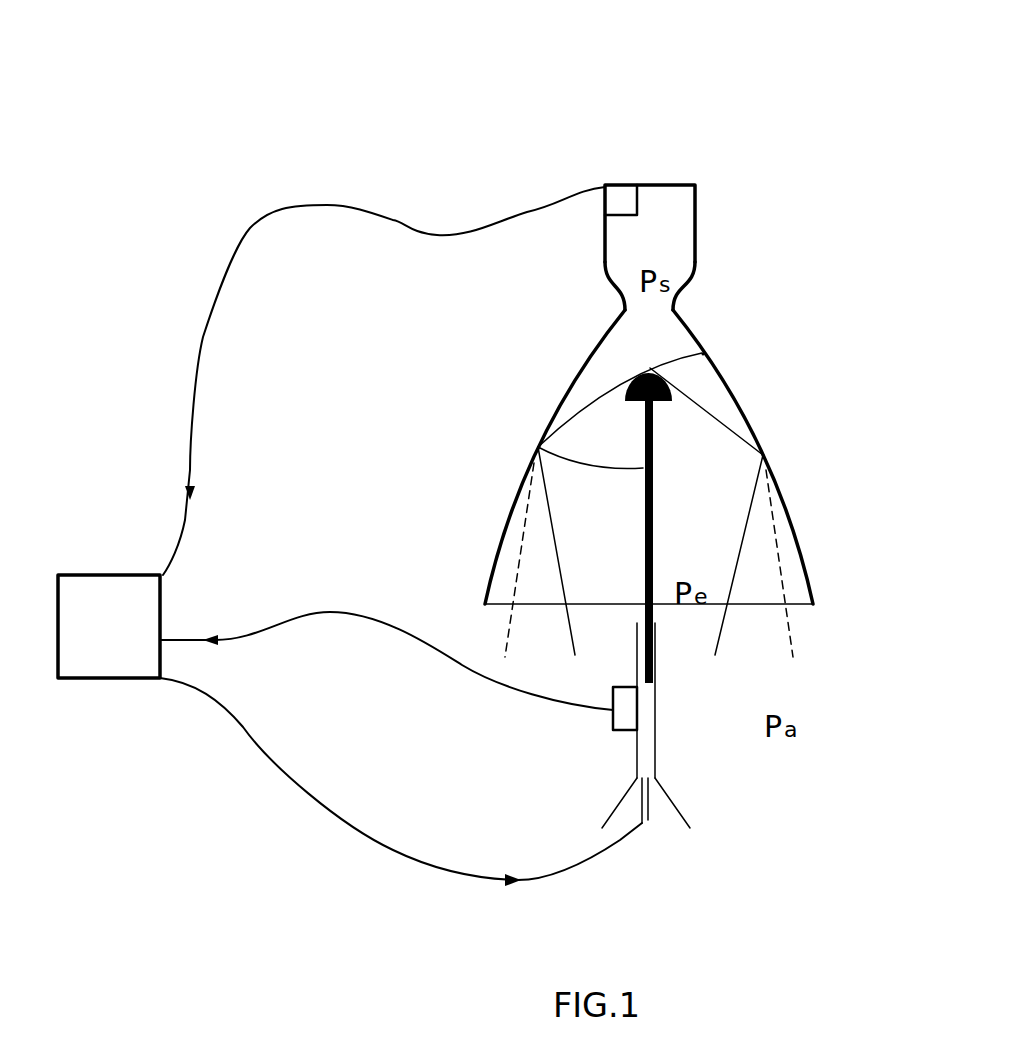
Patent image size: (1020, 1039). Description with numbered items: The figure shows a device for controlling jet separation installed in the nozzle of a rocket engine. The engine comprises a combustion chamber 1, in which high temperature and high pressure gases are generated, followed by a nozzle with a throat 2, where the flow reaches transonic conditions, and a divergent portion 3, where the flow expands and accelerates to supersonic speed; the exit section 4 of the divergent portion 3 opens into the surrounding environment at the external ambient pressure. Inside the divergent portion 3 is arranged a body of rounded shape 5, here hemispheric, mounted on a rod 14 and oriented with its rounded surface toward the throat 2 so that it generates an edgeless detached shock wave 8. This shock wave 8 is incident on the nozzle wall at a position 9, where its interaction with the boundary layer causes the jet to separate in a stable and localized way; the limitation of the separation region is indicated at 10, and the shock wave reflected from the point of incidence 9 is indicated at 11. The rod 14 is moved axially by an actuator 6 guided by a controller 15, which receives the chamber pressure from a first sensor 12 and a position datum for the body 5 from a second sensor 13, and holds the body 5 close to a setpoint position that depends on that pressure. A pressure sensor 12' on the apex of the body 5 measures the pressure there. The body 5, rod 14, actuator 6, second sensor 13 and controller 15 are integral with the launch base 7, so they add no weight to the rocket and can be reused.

The combustion chamber 1 is at (666, 228).
The throat 2 is at (676, 308).
The divergent portion 3 is at (720, 377).
The exit section 4 is at (755, 605).
The body of rounded shape 5 is at (650, 370).
The actuator 6 is at (637, 648).
The launch base 7 is at (602, 800).
The detached shock wave 8 is at (712, 403).
The position of incidence 9 is at (763, 455).
The limitation of the separation region 10 is at (777, 545).
The reflected shock wave 11 is at (552, 522).
The first sensor 12 is at (400, 314).
The pressure sensor 12' is at (740, 335).
The second sensor 13 is at (613, 729).
The rod 14 is at (538, 447).
The controller 15 is at (90, 575).